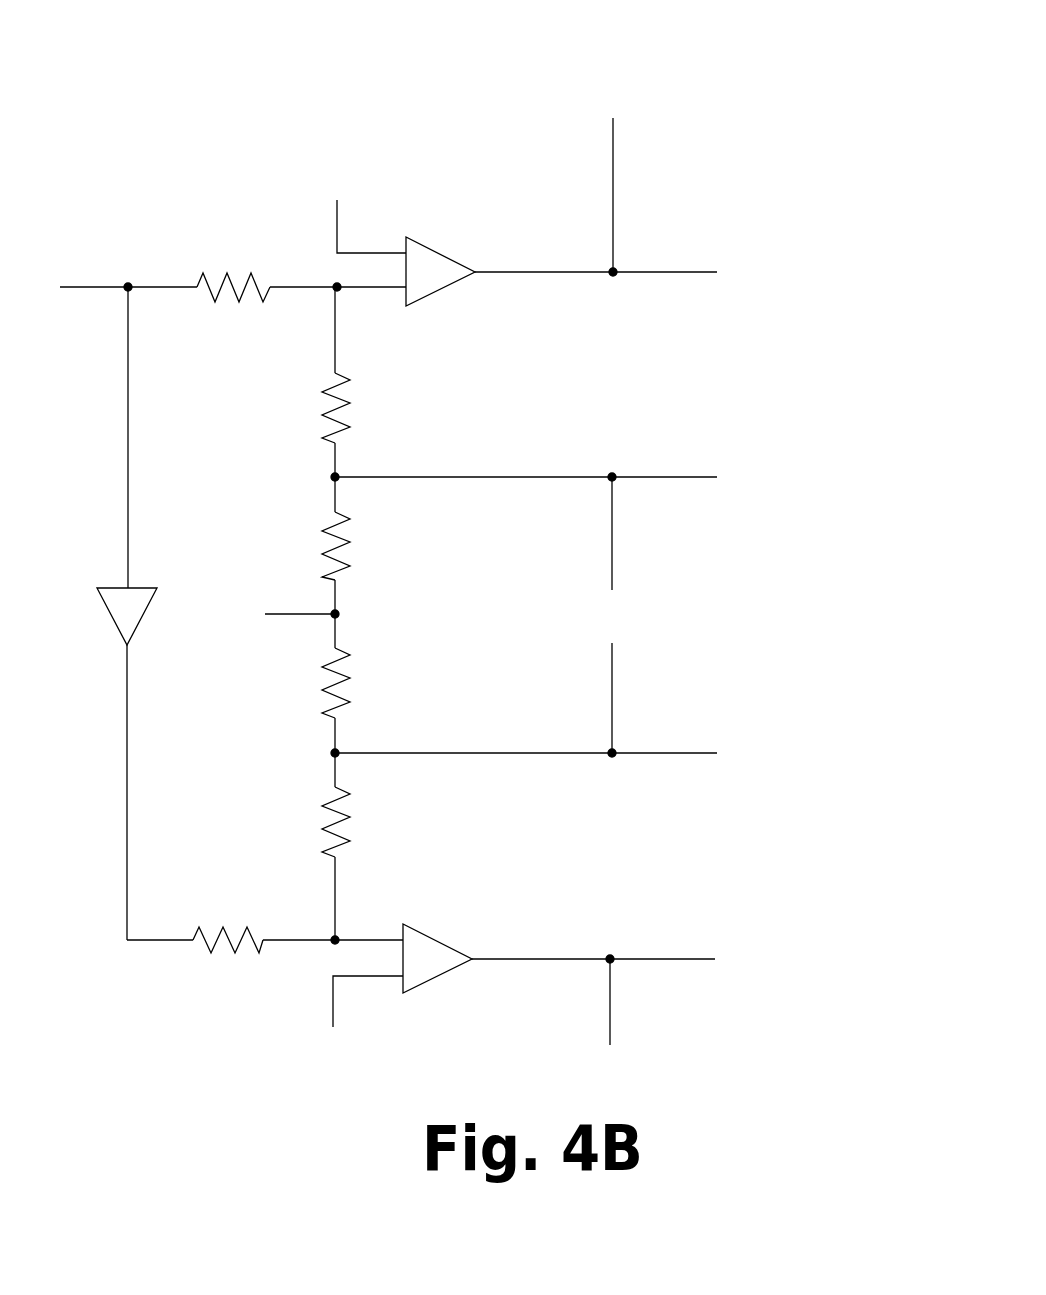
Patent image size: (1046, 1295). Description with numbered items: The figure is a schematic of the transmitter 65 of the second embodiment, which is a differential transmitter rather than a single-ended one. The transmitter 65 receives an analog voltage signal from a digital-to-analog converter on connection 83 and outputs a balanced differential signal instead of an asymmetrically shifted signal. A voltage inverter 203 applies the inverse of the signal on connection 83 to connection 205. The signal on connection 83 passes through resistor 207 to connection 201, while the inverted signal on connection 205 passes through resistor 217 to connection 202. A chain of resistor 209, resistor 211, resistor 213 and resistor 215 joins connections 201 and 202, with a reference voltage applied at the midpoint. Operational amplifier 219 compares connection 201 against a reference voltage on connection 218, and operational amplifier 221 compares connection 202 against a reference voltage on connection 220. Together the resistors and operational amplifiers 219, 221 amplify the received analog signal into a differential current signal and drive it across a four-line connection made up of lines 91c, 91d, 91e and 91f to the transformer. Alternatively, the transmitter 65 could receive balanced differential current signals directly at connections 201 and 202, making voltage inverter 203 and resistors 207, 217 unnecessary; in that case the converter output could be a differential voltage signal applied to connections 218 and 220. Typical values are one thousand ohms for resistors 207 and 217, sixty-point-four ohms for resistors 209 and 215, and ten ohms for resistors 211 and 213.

The transmitter 65 is at (338, 82).
The connection 83 is at (163, 287).
The resistor 207 is at (233, 258).
The connection 201 is at (302, 288).
The connection 218 is at (337, 240).
The operational amplifier 219 is at (442, 245).
The line 91c is at (691, 273).
The resistor 209 is at (372, 408).
The line 91d is at (682, 478).
The resistor 211 is at (307, 546).
The resistor 213 is at (362, 692).
The line 91e is at (688, 753).
The resistor 215 is at (307, 820).
The voltage inverter 203 is at (108, 613).
The connection 205 is at (158, 940).
The resistor 217 is at (238, 968).
The connection 202 is at (298, 940).
The operational amplifier 221 is at (420, 924).
The connection 220 is at (350, 977).
The line 91f is at (688, 960).